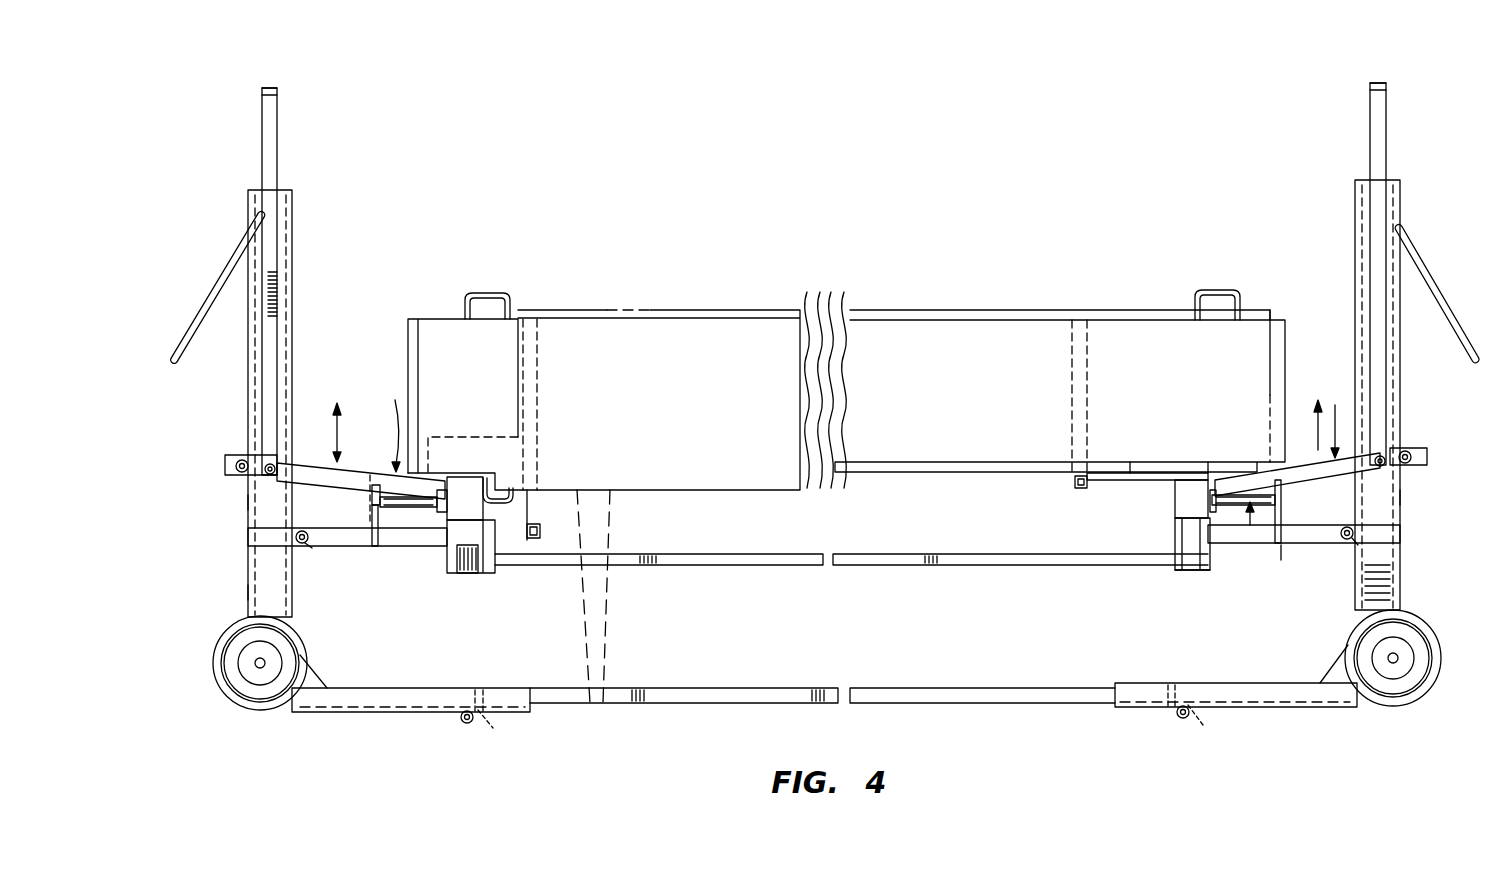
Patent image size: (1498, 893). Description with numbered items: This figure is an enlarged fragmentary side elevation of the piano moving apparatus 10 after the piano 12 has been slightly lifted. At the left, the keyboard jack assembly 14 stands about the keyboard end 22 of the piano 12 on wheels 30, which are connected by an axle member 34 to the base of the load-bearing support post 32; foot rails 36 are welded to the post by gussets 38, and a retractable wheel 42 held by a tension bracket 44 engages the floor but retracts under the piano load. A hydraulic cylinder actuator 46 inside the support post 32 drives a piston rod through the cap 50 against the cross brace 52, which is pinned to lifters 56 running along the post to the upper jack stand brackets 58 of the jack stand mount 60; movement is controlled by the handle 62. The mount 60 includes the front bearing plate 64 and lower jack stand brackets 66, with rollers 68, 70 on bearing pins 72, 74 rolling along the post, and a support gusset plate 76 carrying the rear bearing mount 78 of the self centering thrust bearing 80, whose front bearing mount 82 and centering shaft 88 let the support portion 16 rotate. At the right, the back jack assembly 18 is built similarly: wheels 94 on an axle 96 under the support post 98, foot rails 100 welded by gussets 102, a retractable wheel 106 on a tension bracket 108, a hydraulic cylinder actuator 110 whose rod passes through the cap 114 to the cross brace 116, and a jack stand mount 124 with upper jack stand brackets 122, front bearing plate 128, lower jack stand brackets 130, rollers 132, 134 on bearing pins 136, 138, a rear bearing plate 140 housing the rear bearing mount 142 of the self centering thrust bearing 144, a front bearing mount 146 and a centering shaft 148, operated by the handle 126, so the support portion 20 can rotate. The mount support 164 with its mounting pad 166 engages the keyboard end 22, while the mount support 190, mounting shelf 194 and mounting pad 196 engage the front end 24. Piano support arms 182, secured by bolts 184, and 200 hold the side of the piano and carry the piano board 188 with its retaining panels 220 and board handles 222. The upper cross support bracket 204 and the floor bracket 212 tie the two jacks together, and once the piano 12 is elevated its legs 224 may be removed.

The piano moving apparatus 10 is at (776, 145).
The piano 12 is at (940, 318).
The keyboard jack assembly 14 is at (210, 222).
The support portion 16 is at (450, 575).
The back jack assembly 18 is at (1432, 224).
The support portion 20 is at (1210, 578).
The keyboard end 22 is at (446, 437).
The front end 24 is at (1257, 400).
The wheels 30 is at (215, 670).
The support post 32 is at (265, 590).
The axle member 34 is at (255, 663).
The foot rails 36 is at (370, 712).
The gussets 38 is at (316, 680).
The retractable wheel 42 is at (460, 722).
The tension bracket 44 is at (486, 722).
The hydraulic cylinder actuator 46 is at (262, 500).
The cap 50 is at (254, 192).
The cross brace 52 is at (264, 90).
The lifters 56 is at (270, 135).
The upper jack stand brackets 58 is at (312, 470).
The jack stand mount 60 is at (325, 440).
The handle 62 is at (177, 352).
The front bearing plate 64 is at (460, 487).
The lower jack stand brackets 66 is at (262, 540).
The roller 68 is at (303, 544).
The roller 70 is at (230, 460).
The bearing pin 72 is at (320, 548).
The bearing pin 74 is at (239, 458).
The support gusset plate 76 is at (371, 522).
The rear bearing mount 78 is at (373, 482).
The self centering thrust bearing 80 is at (387, 425).
The front bearing mount 82 is at (440, 520).
The centering shaft 88 is at (392, 510).
The wheels 94 is at (1442, 660).
The axle 96 is at (1398, 660).
The support post 98 is at (1403, 585).
The foot rails 100 is at (1308, 712).
The gussets 102 is at (1340, 695).
The retractable wheel 106 is at (1178, 718).
The tension bracket 108 is at (1200, 722).
The hydraulic cylinder actuator 110 is at (1388, 498).
The cap 114 is at (1385, 182).
The cross brace 116 is at (1387, 88).
The upper jack stand brackets 122 is at (1305, 462).
The jack stand mount 124 is at (1345, 405).
The handle 126 is at (1452, 318).
The front bearing plate 128 is at (1214, 562).
The lower jack stand brackets 130 is at (1325, 545).
The roller 132 is at (1400, 540).
The roller 134 is at (1398, 450).
The bearing pin 136 is at (1352, 533).
The bearing pin 138 is at (1412, 455).
The rear bearing plate 140 is at (1283, 500).
The rear bearing mount 142 is at (1260, 505).
The self centering thrust bearing 144 is at (1252, 540).
The front bearing mount 146 is at (1218, 515).
The centering shaft 148 is at (1280, 545).
The mount support 164 is at (470, 548).
The mounting pad 166 is at (475, 500).
The piano support arm 182 is at (540, 495).
The bolts 184 is at (545, 530).
The piano board 188 is at (716, 308).
The mount support 190 is at (1180, 500).
The mounting shelf 194 is at (1130, 480).
The mounting pad 196 is at (1172, 462).
The piano support arm 200 is at (1072, 484).
The upper cross support bracket 204 is at (880, 565).
The floor bracket 212 is at (920, 703).
The retaining panels 220 is at (412, 330).
The board handles 222 is at (492, 293).
The legs 224 is at (598, 638).